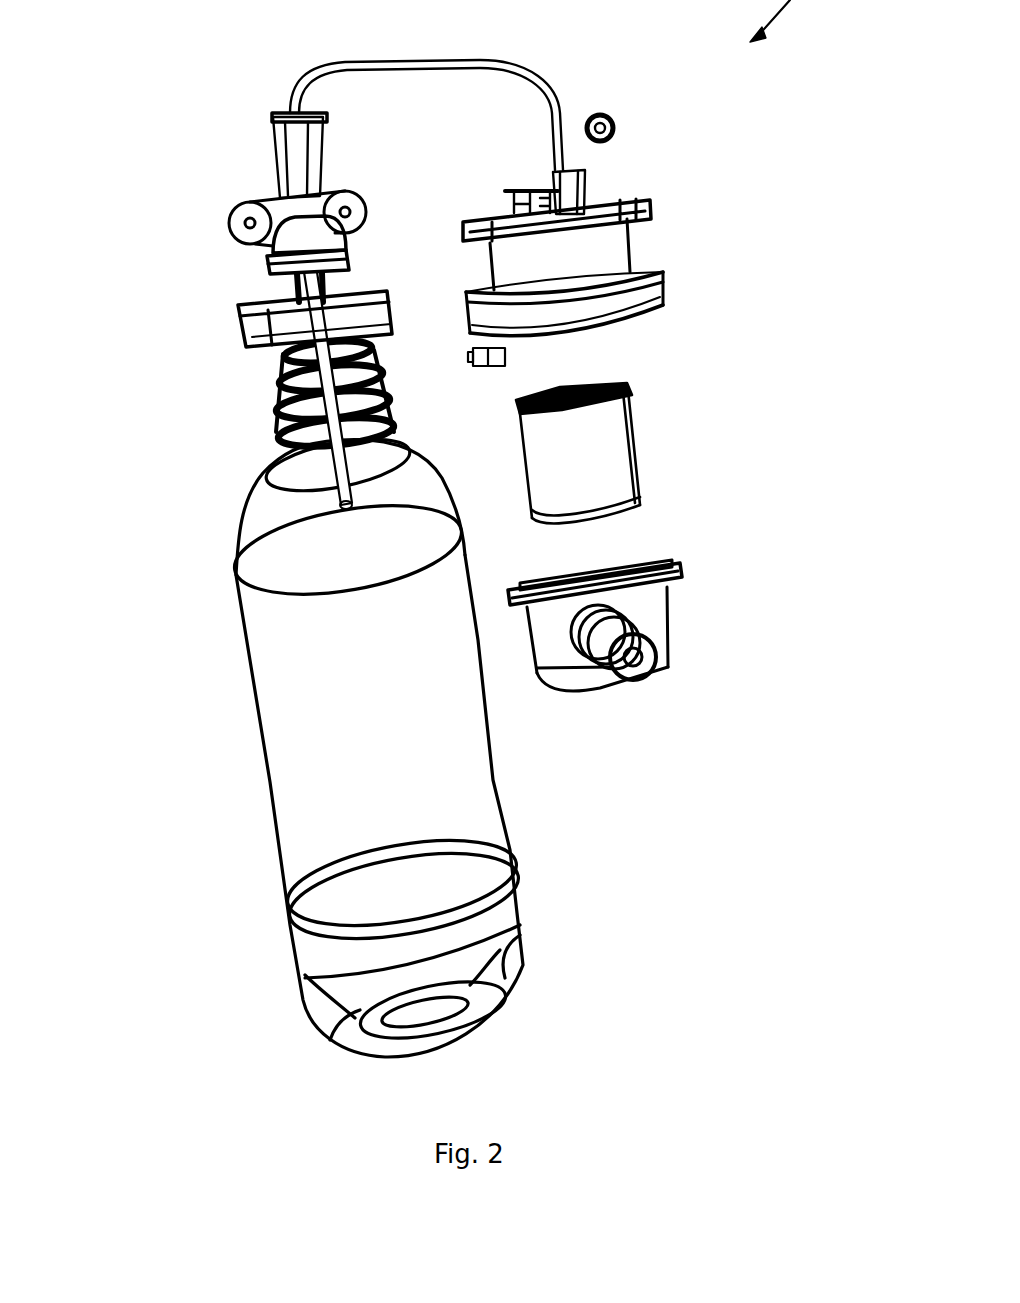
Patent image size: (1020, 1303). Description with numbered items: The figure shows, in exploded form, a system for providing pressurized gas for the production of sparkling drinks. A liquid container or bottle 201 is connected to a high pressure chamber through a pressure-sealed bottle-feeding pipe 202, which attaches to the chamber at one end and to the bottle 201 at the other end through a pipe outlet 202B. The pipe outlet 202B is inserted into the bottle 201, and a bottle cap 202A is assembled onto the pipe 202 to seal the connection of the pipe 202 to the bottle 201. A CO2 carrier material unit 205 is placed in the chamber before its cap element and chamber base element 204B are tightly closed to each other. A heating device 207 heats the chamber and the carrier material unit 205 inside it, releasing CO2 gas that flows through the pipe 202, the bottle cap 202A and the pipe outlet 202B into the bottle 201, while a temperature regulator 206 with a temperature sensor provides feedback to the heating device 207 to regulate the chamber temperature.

The liquid container 201 is at (250, 712).
The pressure-sealed bottle-feeding pipe 202 is at (416, 48).
The bottle cap 202A is at (333, 500).
The pipe outlet 202B is at (265, 245).
The chamber base element 204B is at (628, 246).
The CO2 carrier material unit 205 is at (640, 452).
The temperature regulator 206 is at (470, 358).
The heating device 207 is at (525, 192).